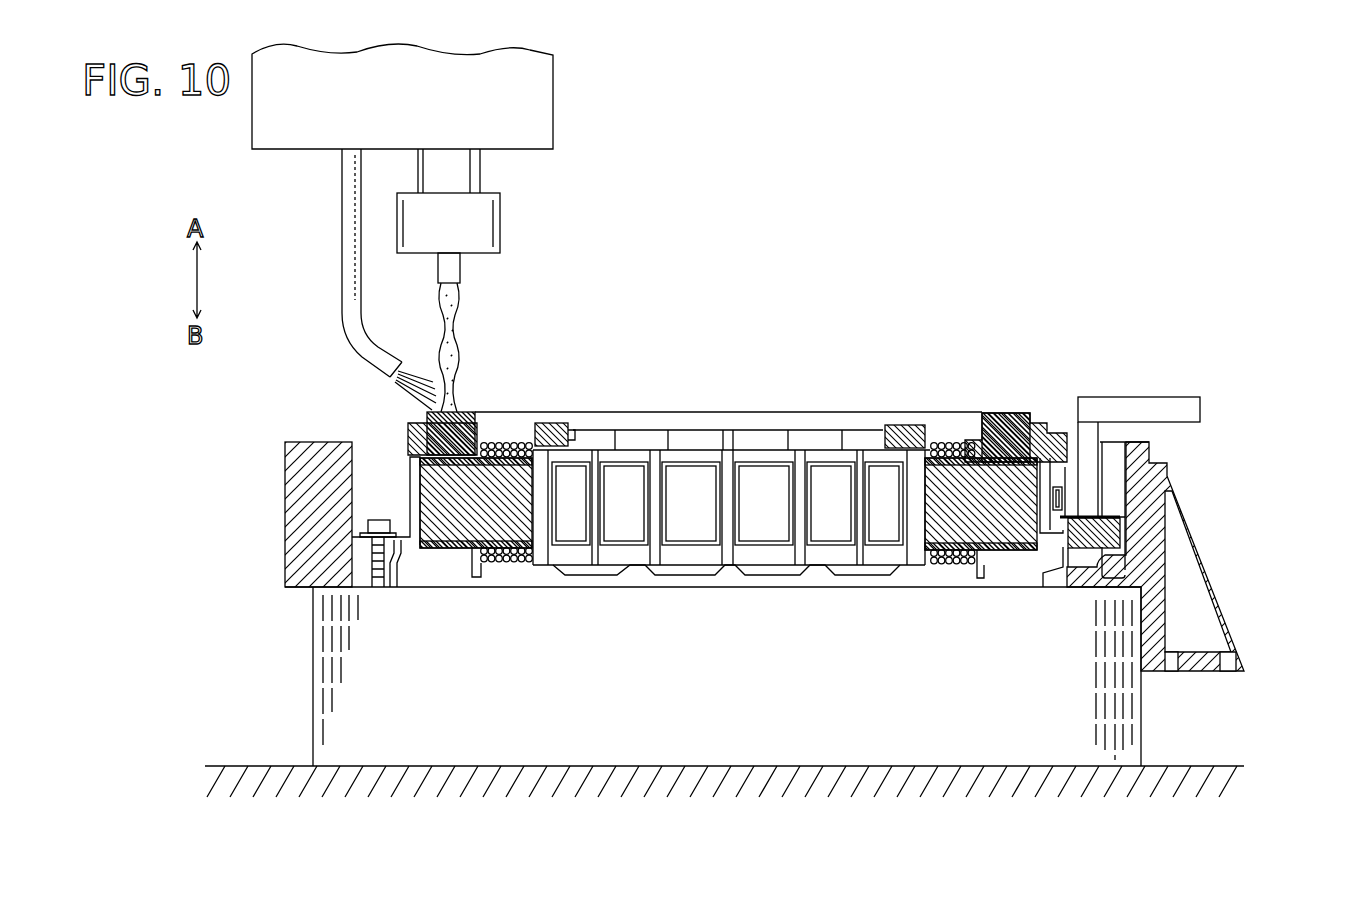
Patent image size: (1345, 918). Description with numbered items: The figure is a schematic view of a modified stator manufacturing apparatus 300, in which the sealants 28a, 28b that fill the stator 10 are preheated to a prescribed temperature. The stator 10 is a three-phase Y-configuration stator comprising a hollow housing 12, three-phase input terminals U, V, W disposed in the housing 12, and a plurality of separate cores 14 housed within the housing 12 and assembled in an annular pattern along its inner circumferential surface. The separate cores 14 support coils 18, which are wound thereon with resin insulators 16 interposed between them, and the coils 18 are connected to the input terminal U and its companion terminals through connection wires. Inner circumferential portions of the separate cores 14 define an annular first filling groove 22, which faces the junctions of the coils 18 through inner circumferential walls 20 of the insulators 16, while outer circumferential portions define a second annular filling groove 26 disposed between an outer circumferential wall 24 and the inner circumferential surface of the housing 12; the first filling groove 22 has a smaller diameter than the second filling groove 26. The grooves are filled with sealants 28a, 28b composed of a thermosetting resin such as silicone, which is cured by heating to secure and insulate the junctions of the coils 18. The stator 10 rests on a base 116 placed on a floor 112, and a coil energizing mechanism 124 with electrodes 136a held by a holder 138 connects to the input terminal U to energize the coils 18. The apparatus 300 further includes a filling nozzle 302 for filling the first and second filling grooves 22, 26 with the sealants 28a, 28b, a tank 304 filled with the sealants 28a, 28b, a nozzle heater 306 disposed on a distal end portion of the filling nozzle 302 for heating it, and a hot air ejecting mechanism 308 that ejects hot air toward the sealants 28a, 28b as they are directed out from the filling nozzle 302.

The stator manufacturing apparatus 300 is at (1062, 117).
The tank 304 is at (530, 118).
The nozzle heater 306 is at (477, 228).
The filling nozzle 302 is at (452, 268).
The hot air ejecting mechanism 308 is at (348, 241).
The stator 10 is at (801, 374).
The housing 12 is at (1115, 584).
The separate cores 14 is at (424, 576).
The insulators 16 is at (447, 550).
The coils 18 is at (498, 567).
The inner circumferential walls 20 is at (580, 440).
The first filling groove 22 is at (913, 432).
The outer circumferential wall 24 is at (495, 420).
The second filling groove 26 is at (1002, 447).
The sealant 28a is at (566, 420).
The sealant 28b is at (420, 402).
The floor 112 is at (256, 762).
The base 116 is at (1074, 708).
The coil energizing mechanism 124 is at (1202, 456).
The electrodes 136a is at (1091, 457).
The holder 138 is at (1193, 410).
The input terminal U is at (1130, 527).